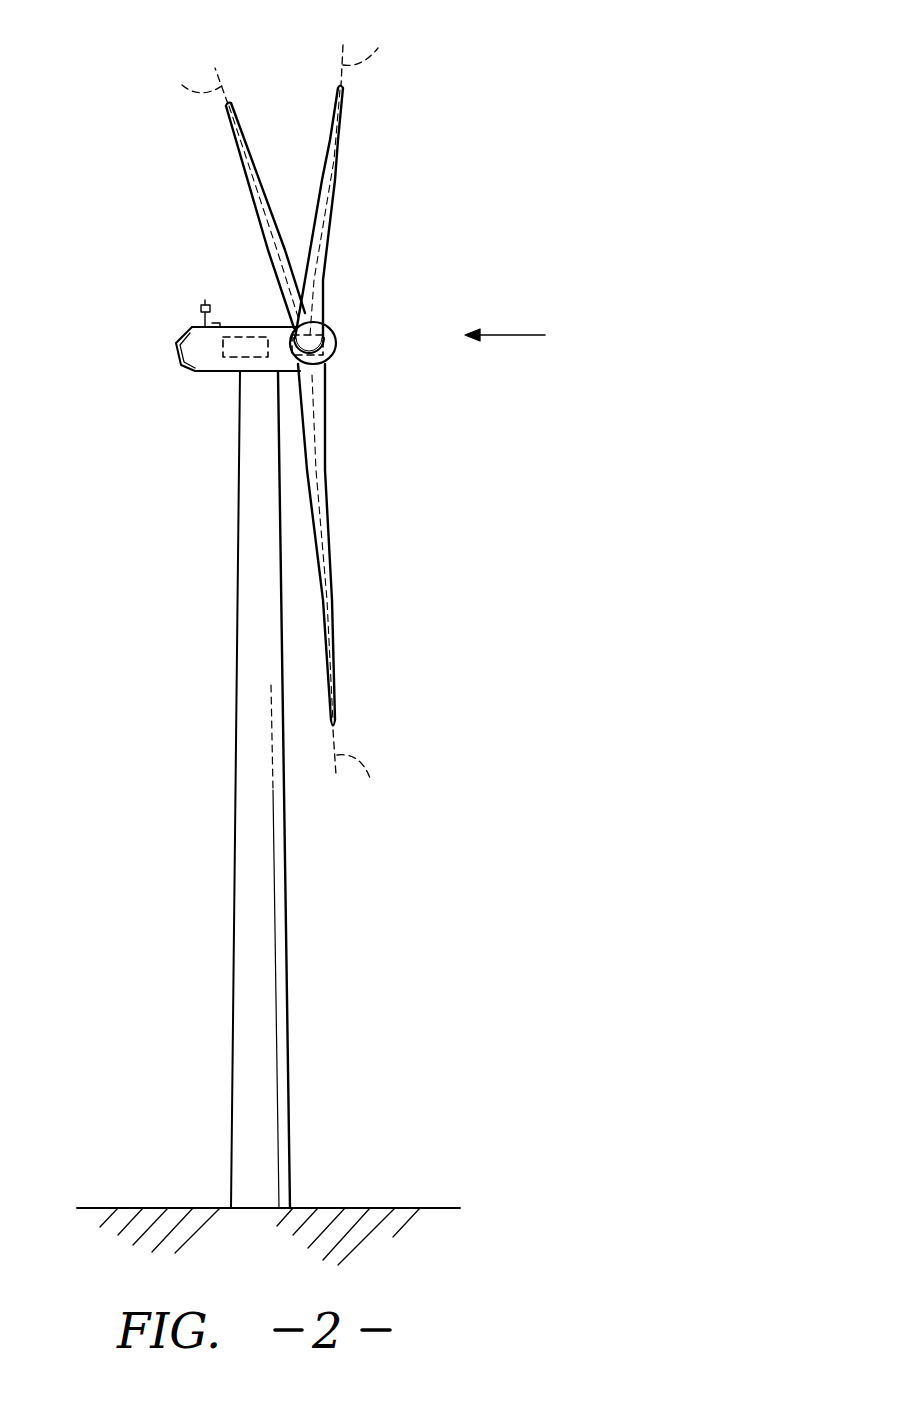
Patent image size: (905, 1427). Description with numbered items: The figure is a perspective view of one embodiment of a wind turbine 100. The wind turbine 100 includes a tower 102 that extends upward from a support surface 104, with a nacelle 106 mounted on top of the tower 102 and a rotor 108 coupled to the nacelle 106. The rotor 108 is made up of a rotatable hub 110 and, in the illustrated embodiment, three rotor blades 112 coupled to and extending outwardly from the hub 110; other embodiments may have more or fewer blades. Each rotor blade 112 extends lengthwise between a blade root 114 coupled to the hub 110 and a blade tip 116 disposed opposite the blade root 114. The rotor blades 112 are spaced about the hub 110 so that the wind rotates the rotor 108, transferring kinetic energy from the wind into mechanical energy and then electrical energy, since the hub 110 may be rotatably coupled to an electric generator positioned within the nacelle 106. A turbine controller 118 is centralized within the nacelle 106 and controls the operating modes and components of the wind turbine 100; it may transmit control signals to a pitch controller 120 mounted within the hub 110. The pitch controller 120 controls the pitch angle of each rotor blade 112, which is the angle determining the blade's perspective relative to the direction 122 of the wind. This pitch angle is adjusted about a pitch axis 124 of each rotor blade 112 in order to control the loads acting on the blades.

The wind turbine 100 is at (437, 165).
The tower 102 is at (247, 903).
The support surface 104 is at (158, 1208).
The nacelle 106 is at (218, 373).
The rotor 108 is at (335, 324).
The hub 110 is at (336, 356).
The rotor blade 112 is at (268, 198).
The blade root 114 is at (287, 322).
The blade tip 116 is at (228, 107).
The turbine controller 118 is at (248, 335).
The pitch controller 120 is at (327, 338).
The direction of the wind 122 is at (520, 335).
The pitch axis 124 is at (270, 418).